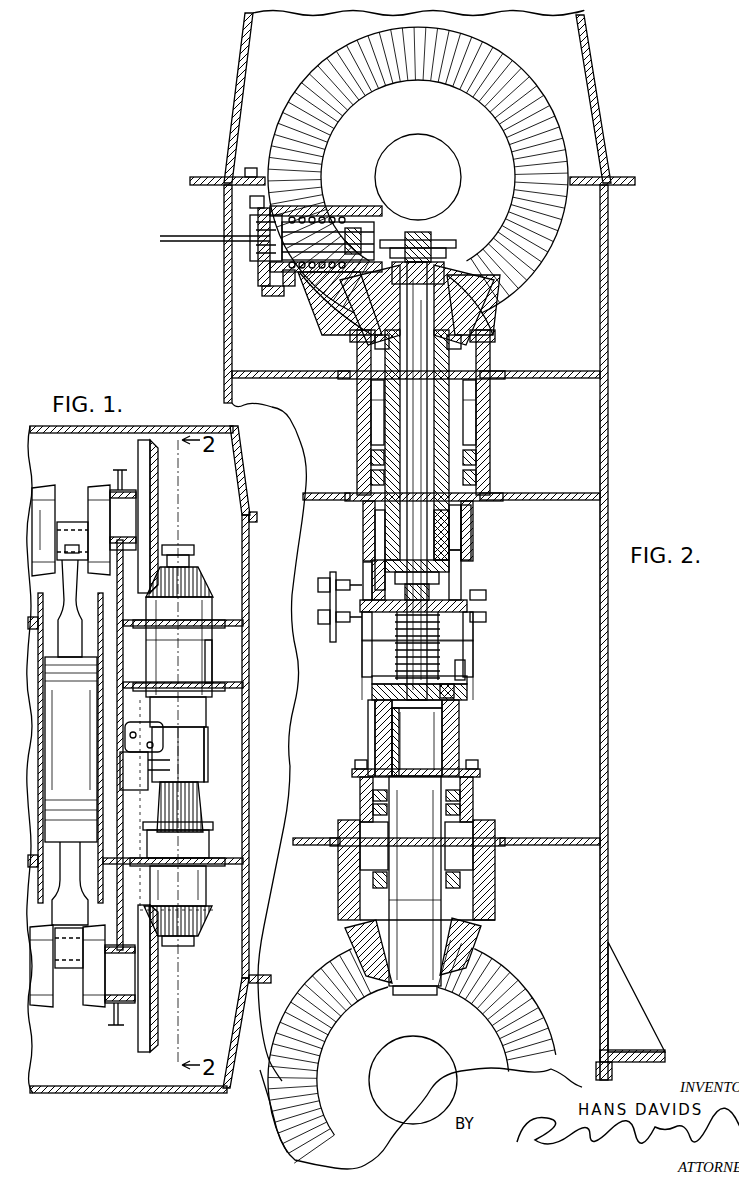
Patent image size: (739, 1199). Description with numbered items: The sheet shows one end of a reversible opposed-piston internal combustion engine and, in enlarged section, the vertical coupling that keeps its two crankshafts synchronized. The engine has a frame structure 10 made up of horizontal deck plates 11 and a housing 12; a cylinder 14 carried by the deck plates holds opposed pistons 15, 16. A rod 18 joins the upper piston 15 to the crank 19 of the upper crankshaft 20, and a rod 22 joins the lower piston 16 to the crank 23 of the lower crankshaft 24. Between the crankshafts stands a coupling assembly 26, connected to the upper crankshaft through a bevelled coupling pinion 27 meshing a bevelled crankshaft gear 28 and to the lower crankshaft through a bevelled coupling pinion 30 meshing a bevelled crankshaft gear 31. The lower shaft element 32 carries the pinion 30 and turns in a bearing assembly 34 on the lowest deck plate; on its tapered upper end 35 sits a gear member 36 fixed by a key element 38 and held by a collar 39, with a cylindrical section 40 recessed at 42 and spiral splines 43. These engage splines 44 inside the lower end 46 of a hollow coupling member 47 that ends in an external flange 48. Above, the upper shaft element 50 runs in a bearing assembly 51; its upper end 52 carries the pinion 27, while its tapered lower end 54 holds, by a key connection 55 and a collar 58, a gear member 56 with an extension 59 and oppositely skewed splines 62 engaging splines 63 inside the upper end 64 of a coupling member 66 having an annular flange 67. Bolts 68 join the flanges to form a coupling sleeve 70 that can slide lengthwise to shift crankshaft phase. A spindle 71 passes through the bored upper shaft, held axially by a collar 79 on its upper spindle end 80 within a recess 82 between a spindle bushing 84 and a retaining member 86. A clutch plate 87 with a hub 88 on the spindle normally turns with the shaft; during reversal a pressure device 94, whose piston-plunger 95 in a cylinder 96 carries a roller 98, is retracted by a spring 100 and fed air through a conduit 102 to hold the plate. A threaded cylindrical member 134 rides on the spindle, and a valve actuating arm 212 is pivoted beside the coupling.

In FIG. 2, the frame structure 10 is at (618, 681).
In FIG. 1, the frame structure 10 is at (163, 940).
In FIG. 2, the deck plates 11 is at (576, 382).
In FIG. 1, the deck plates 11 is at (250, 630).
In FIG. 2, the housing 12 is at (608, 332).
In FIG. 1, the housing 12 is at (248, 578).
In FIG. 1, the cylinder 14 is at (120, 688).
In FIG. 1, the upper piston 15 is at (74, 685).
In FIG. 1, the lower piston 16 is at (72, 825).
In FIG. 1, the rod 18 is at (72, 608).
In FIG. 1, the crank 19 is at (90, 490).
In FIG. 2, the upper crankshaft 20 is at (417, 182).
In FIG. 1, the upper crankshaft 20 is at (44, 497).
In FIG. 1, the rod 22 is at (58, 893).
In FIG. 1, the crank 23 is at (90, 990).
In FIG. 2, the lower crankshaft 24 is at (410, 1084).
In FIG. 1, the lower crankshaft 24 is at (115, 1002).
In FIG. 2, the coupling assembly 26 is at (539, 658).
In FIG. 1, the coupling assembly 26 is at (221, 762).
In FIG. 2, the bevelled coupling pinion 27 is at (492, 316).
In FIG. 1, the bevelled coupling pinion 27 is at (206, 578).
In FIG. 2, the bevelled crankshaft gear 28 is at (525, 103).
In FIG. 1, the bevelled crankshaft gear 28 is at (158, 498).
In FIG. 2, the bevelled coupling pinion 30 is at (478, 942).
In FIG. 1, the bevelled coupling pinion 30 is at (188, 926).
In FIG. 2, the bevelled crankshaft gear 31 is at (508, 987).
In FIG. 1, the bevelled crankshaft gear 31 is at (152, 1026).
In FIG. 2, the lower shaft element 32 is at (412, 850).
In FIG. 2, the bearing assembly 34 is at (470, 790).
In FIG. 1, the bearing assembly 34 is at (205, 842).
In FIG. 2, the upper end of shaft 35 is at (428, 730).
In FIG. 2, the gear member 36 is at (452, 742).
In FIG. 1, the gear member 36 is at (200, 804).
In FIG. 2, the key element 38 is at (395, 742).
In FIG. 2, the collar 39 is at (445, 702).
In FIG. 2, the cylindrical section 40 is at (375, 684).
In FIG. 2, the recess 42 is at (385, 662).
In FIG. 2, the splines 43 is at (372, 722).
In FIG. 2, the splines 44 is at (460, 686).
In FIG. 2, the lower end of coupling member 46 is at (466, 668).
In FIG. 2, the coupling member 47 is at (473, 628).
In FIG. 1, the coupling member 47 is at (208, 775).
In FIG. 2, the external flange 48 is at (455, 572).
In FIG. 2, the upper shaft element 50 is at (445, 428).
In FIG. 2, the bearing assembly 51 is at (470, 447).
In FIG. 1, the bearing assembly 51 is at (219, 661).
In FIG. 2, the upper end of shaft 52 is at (490, 302).
In FIG. 2, the lower end of shaft 54 is at (400, 532).
In FIG. 2, the key connection 55 is at (395, 520).
In FIG. 2, the gear member 56 is at (448, 540).
In FIG. 2, the collar 58 is at (450, 557).
In FIG. 2, the extension 59 is at (440, 590).
In FIG. 2, the splines 62 is at (382, 562).
In FIG. 2, the splines 63 is at (462, 522).
In FIG. 2, the upper end of coupling member 64 is at (508, 522).
In FIG. 2, the coupling member 66 is at (508, 557).
In FIG. 1, the coupling member 66 is at (206, 716).
In FIG. 2, the annular flange 67 is at (488, 594).
In FIG. 2, the bolts 68 is at (488, 612).
In FIG. 2, the coupling sleeve 70 is at (485, 645).
In FIG. 1, the coupling sleeve 70 is at (192, 748).
In FIG. 2, the spindle 71 is at (422, 392).
In FIG. 2, the collar 79 is at (442, 272).
In FIG. 2, the upper spindle end 80 is at (366, 322).
In FIG. 2, the recess 82 is at (352, 300).
In FIG. 2, the spindle bushing 84 is at (492, 290).
In FIG. 2, the retaining member 86 is at (452, 262).
In FIG. 2, the clutch plate 87 is at (455, 250).
In FIG. 1, the clutch plate 87 is at (190, 556).
In FIG. 2, the hub 88 is at (432, 246).
In FIG. 2, the pressure device 94 is at (274, 286).
In FIG. 2, the piston-plunger 95 is at (330, 237).
In FIG. 2, the cylinder 96 is at (330, 218).
In FIG. 2, the roller 98 is at (364, 244).
In FIG. 2, the spring 100 is at (304, 273).
In FIG. 2, the conduit 102 is at (197, 242).
In FIG. 2, the cylindrical member 134 is at (395, 638).
In FIG. 2, the valve actuating arm 212 is at (330, 600).
In FIG. 1, the valve actuating arm 212 is at (150, 725).